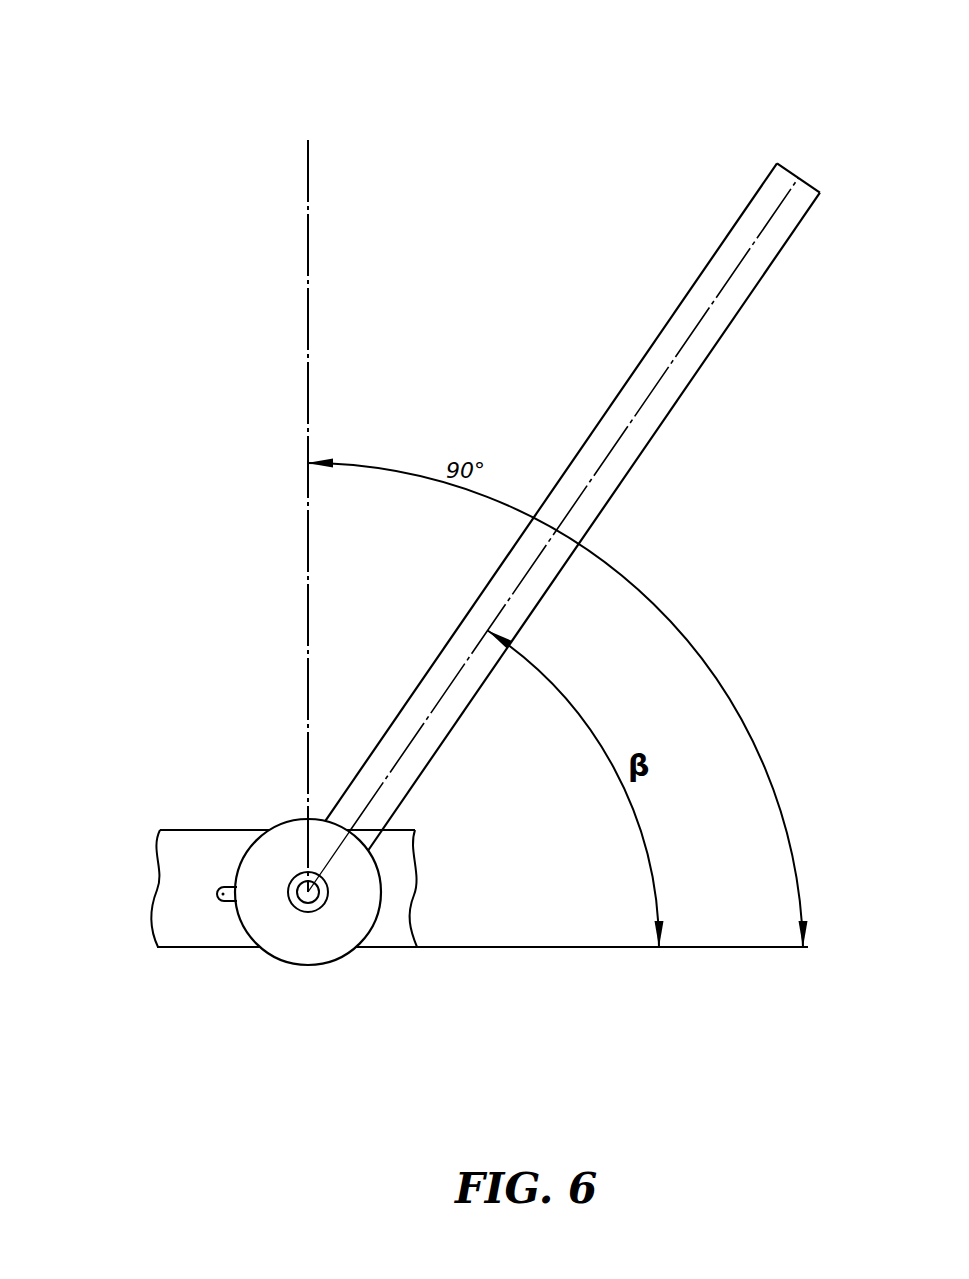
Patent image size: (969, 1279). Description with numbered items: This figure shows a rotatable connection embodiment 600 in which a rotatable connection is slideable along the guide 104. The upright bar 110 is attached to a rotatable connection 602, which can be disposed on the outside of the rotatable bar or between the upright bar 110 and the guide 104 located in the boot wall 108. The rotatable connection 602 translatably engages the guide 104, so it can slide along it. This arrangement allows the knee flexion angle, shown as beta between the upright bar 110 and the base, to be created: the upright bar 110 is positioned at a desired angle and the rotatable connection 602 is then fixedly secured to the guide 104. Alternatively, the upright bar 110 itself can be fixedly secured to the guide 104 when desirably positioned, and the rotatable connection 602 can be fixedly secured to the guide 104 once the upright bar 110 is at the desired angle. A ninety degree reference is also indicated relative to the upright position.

The rotatable connection embodiment 600 is at (96, 73).
The guide 104 is at (226, 903).
The boot wall 108 is at (180, 830).
The upright bar 110 is at (619, 394).
The rotatable connection 602 is at (290, 821).